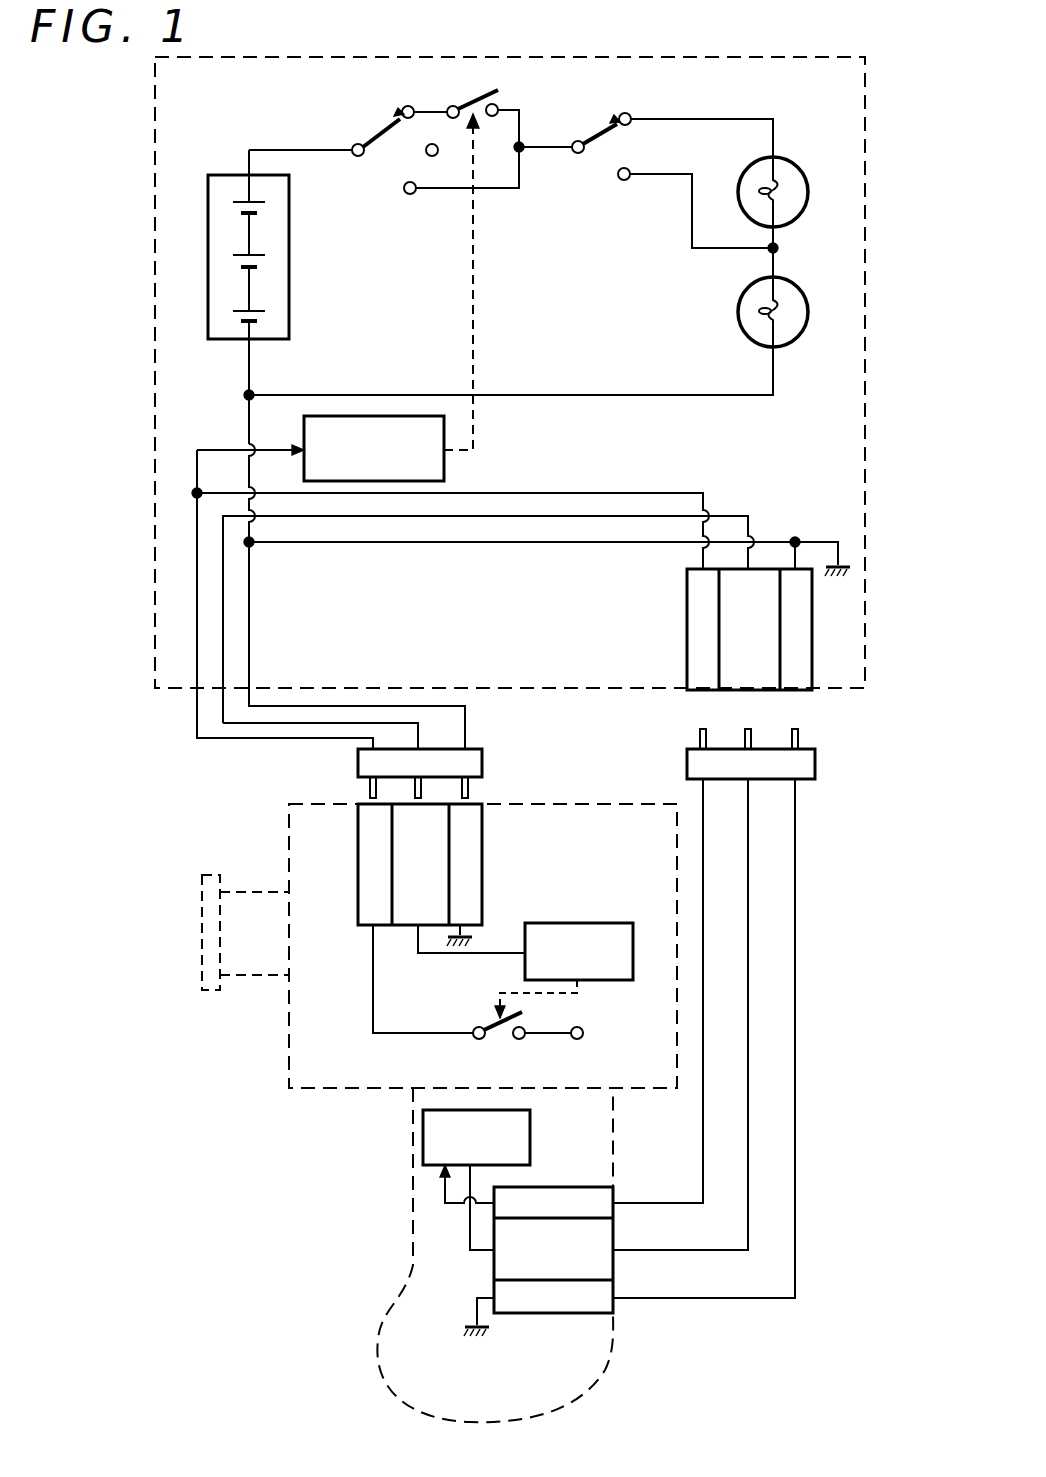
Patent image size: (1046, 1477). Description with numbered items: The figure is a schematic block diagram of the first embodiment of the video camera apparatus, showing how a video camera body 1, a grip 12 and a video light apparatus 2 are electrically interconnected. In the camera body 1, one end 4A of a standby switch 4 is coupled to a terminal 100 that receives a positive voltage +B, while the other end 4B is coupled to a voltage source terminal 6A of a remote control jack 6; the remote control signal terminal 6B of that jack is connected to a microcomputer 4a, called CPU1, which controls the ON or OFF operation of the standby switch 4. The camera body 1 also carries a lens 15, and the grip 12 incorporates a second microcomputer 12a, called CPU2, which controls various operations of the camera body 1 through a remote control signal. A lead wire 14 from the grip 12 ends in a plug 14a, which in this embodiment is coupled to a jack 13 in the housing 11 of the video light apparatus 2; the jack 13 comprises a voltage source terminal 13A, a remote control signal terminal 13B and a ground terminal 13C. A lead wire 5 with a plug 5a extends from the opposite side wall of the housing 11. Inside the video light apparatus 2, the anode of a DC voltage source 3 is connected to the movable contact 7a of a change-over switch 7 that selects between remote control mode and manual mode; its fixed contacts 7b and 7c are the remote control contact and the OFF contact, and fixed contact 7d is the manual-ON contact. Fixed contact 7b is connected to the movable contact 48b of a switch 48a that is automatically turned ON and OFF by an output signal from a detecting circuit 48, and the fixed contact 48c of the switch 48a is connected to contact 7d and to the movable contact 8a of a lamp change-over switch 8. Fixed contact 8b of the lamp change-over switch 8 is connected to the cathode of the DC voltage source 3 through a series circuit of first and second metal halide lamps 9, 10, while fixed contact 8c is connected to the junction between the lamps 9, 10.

The video camera body 1 is at (293, 1092).
The video light apparatus 2 is at (748, 72).
The DC voltage source 3 is at (289, 298).
The standby switch 4 is at (507, 1004).
The one end of standby switch 4A is at (524, 1028).
The other end of standby switch 4B is at (476, 1028).
The microcomputer 4a is at (595, 923).
The lead wire 5 is at (230, 740).
The plug 5a is at (482, 752).
The remote control jack 6 is at (427, 891).
The voltage source terminal 6A is at (365, 928).
The remote control signal terminal 6B is at (400, 928).
The change-over switch 7 is at (376, 151).
The movable contact 7a is at (353, 156).
The fixed contact 7b is at (406, 105).
The fixed contact 7c is at (434, 156).
The fixed contact 7d is at (411, 194).
The lamp change-over switch 8 is at (601, 162).
The movable contact 8a is at (577, 153).
The fixed contact 8b is at (629, 125).
The fixed contact 8c is at (621, 180).
The first metal halide lamp 9 is at (808, 192).
The second metal halide lamp 10 is at (808, 318).
The housing 11 is at (865, 655).
The grip 12 is at (373, 1331).
The central processing unit 12a is at (530, 1143).
The jack 13 is at (753, 656).
The voltage source terminal 13A is at (695, 692).
The remote control signal terminal 13B is at (748, 692).
The ground terminal 13C is at (805, 692).
The lead wire 14 is at (795, 1047).
The plug 14a is at (815, 762).
The lens 15 is at (200, 936).
The detecting circuit 48 is at (444, 466).
The switch 48a is at (489, 116).
The movable contact 48b is at (458, 88).
The fixed contact 48c is at (519, 97).
The terminal 100 is at (580, 1027).